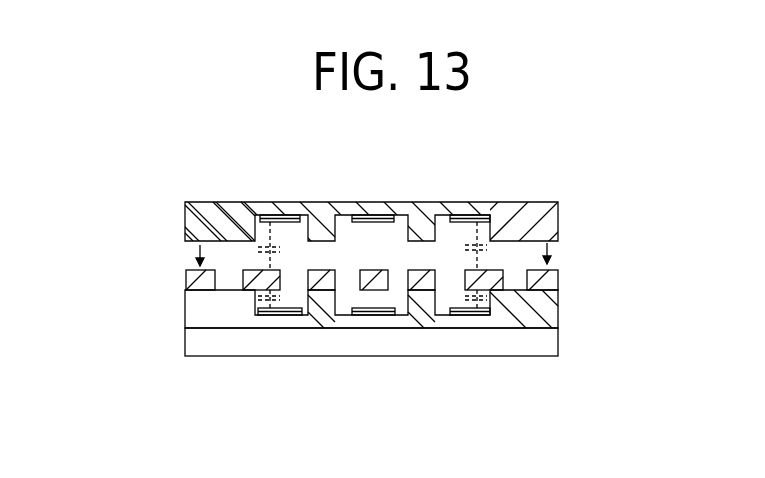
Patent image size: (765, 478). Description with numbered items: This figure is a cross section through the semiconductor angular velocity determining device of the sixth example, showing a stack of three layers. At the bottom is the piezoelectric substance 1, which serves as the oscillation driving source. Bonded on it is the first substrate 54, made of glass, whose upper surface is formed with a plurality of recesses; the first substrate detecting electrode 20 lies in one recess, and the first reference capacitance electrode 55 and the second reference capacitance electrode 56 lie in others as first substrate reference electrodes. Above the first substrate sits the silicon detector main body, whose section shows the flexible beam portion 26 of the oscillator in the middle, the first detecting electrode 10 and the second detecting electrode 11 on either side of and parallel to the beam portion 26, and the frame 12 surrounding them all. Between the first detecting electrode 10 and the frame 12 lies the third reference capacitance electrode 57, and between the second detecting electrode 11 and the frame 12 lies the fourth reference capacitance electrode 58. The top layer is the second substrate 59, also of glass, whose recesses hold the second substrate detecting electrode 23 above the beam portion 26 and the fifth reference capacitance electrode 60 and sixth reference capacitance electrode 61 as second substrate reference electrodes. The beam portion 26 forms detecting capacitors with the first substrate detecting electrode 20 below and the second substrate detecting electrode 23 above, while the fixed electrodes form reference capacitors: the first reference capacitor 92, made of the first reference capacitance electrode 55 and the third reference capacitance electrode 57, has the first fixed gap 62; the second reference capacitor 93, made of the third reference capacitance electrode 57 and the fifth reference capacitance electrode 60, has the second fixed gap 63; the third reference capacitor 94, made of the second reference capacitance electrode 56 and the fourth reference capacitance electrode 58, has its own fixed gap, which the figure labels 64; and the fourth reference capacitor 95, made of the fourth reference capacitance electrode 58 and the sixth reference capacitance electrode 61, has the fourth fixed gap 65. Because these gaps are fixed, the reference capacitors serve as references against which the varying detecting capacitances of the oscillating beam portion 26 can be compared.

The piezoelectric substance 1 is at (558, 341).
The first detecting electrode 10 is at (320, 290).
The second detecting electrode 11 is at (435, 268).
The frame 12 is at (185, 282).
The first substrate detecting electrode 20 is at (410, 293).
The second substrate detecting electrode 23 is at (387, 232).
The beam portion 26 is at (375, 290).
The first substrate 54 is at (185, 318).
The first reference capacitance electrode 55 is at (292, 297).
The second reference capacitance electrode 56 is at (463, 307).
The third reference capacitance electrode 57 is at (185, 232).
The fourth reference capacitance electrode 58 is at (558, 280).
The second substrate 59 is at (557, 212).
The fifth reference capacitance electrode 60 is at (287, 232).
The sixth reference capacitance electrode 61 is at (490, 233).
The first fixed gap 62 is at (258, 300).
The second fixed gap 63 is at (248, 270).
The support block 64 is at (517, 323).
The fourth fixed gap 65 is at (487, 258).
The first reference capacitor 92 is at (255, 297).
The second reference capacitor 93 is at (268, 248).
The third reference capacitor 94 is at (487, 312).
The fourth reference capacitor 95 is at (478, 235).